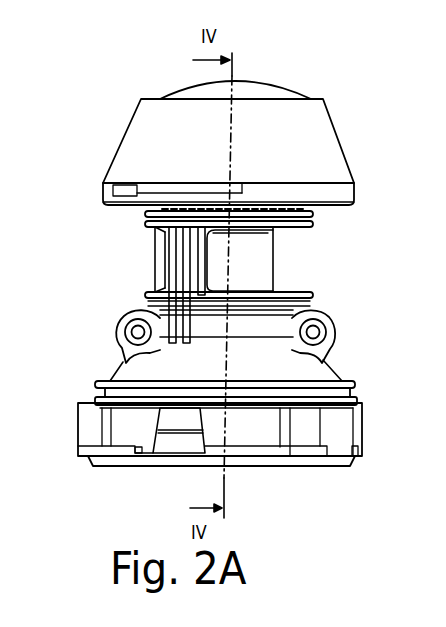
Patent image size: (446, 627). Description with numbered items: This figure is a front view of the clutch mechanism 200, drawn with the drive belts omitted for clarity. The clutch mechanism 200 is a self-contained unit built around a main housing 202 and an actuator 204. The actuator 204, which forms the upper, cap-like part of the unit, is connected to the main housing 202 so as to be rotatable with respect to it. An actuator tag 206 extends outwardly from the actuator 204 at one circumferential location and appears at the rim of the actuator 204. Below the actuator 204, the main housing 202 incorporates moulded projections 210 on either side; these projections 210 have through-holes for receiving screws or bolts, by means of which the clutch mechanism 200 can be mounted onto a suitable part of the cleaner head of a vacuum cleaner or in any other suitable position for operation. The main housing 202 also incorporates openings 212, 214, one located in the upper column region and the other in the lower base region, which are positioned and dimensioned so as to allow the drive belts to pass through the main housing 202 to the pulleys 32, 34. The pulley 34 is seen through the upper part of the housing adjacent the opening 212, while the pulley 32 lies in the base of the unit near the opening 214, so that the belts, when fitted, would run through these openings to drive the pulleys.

The clutch mechanism 200 is at (110, 131).
The actuator 204 is at (325, 140).
The actuator tag 206 is at (170, 187).
The opening 212 is at (293, 236).
The pulley 34 is at (255, 271).
The main housing 202 is at (320, 370).
The moulded projections 210 is at (118, 330).
The pulley 32 is at (168, 445).
The opening 214 is at (203, 439).